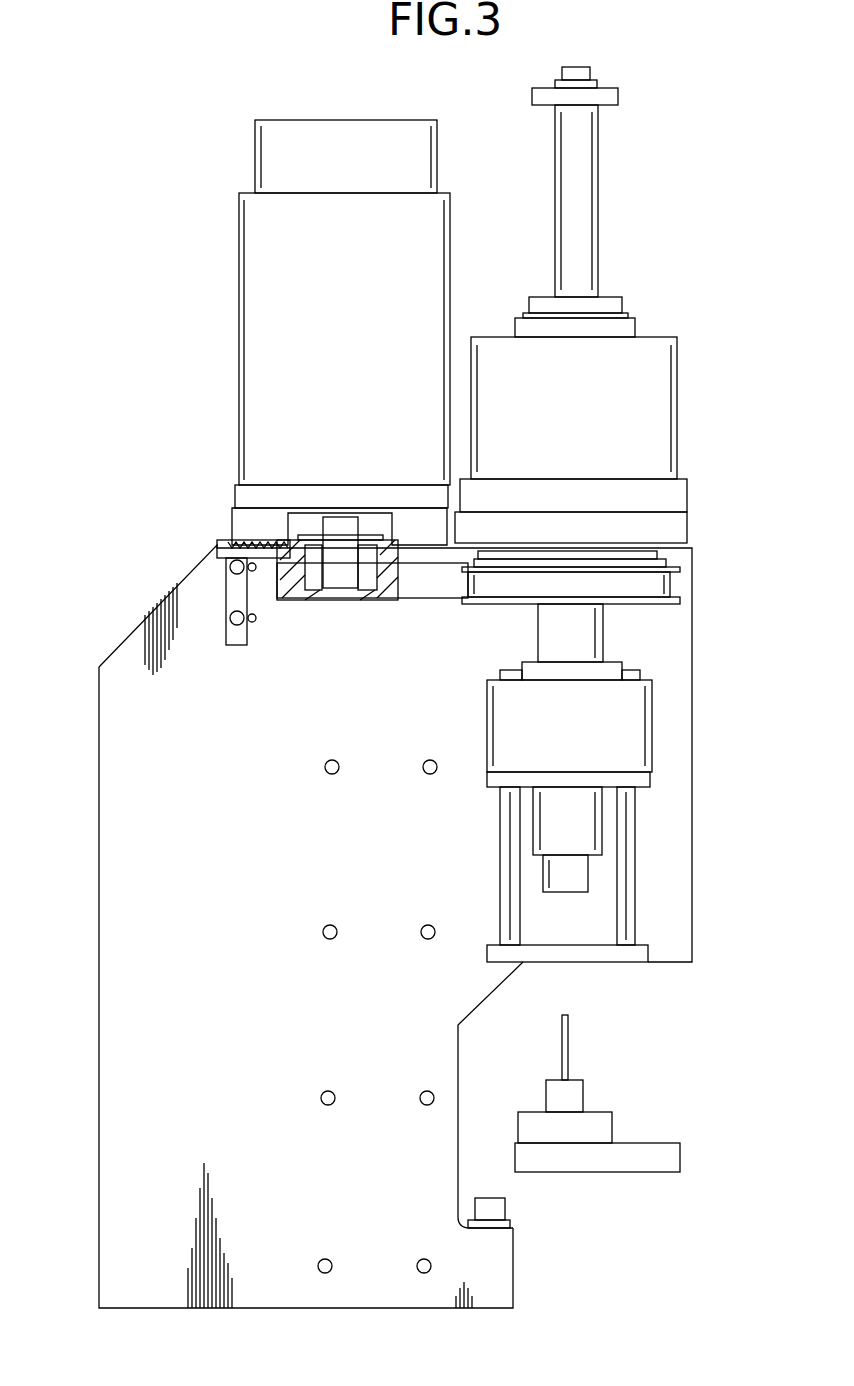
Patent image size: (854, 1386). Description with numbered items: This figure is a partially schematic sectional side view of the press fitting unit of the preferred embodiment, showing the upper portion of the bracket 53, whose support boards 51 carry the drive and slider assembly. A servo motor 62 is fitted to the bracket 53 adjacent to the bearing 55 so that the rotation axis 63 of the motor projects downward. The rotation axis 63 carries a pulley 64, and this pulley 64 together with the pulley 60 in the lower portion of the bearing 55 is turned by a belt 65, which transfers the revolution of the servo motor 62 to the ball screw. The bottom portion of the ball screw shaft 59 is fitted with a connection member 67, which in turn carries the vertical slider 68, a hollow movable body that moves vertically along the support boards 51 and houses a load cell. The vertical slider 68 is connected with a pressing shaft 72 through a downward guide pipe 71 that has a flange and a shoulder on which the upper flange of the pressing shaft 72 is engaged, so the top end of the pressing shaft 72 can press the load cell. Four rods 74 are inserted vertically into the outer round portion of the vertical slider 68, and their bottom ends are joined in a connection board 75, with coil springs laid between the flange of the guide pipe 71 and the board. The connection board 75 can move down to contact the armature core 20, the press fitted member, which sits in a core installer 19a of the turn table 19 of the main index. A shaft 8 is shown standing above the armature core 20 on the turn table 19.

The pin 8 is at (568, 1036).
The turn table 19 is at (650, 1162).
The core installer 19a is at (608, 1127).
The armature core 20 is at (583, 1090).
The support board 51 is at (127, 875).
The bracket 53 is at (99, 728).
The bearing 55 is at (677, 398).
The ball screw shaft 59 is at (585, 223).
The pulley 60 is at (498, 608).
The servo motor 62 is at (238, 405).
The rotation axis 63 is at (343, 572).
The pulley 64 is at (307, 603).
The belt 65 is at (438, 585).
The connection member 67 is at (603, 628).
The vertical slider 68 is at (652, 700).
The guide pipe 71 is at (593, 812).
The pressing shaft 72 is at (588, 877).
The rod 74 is at (633, 897).
The connection board 75 is at (627, 957).